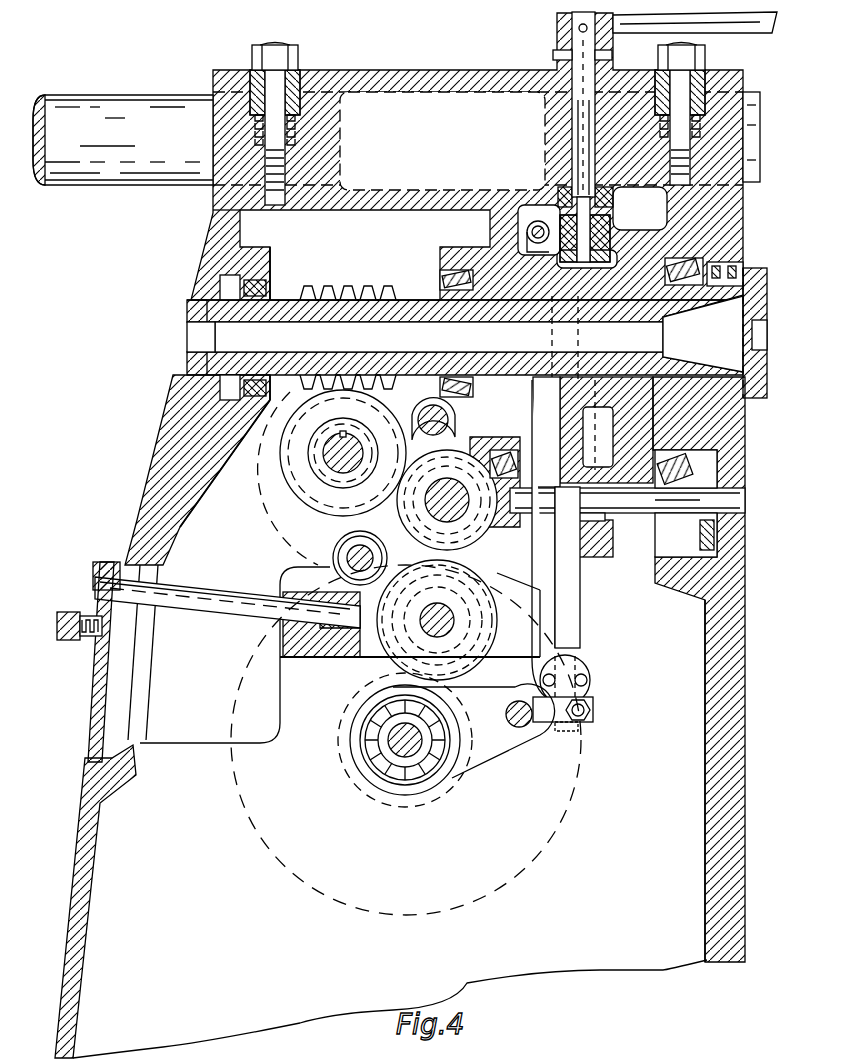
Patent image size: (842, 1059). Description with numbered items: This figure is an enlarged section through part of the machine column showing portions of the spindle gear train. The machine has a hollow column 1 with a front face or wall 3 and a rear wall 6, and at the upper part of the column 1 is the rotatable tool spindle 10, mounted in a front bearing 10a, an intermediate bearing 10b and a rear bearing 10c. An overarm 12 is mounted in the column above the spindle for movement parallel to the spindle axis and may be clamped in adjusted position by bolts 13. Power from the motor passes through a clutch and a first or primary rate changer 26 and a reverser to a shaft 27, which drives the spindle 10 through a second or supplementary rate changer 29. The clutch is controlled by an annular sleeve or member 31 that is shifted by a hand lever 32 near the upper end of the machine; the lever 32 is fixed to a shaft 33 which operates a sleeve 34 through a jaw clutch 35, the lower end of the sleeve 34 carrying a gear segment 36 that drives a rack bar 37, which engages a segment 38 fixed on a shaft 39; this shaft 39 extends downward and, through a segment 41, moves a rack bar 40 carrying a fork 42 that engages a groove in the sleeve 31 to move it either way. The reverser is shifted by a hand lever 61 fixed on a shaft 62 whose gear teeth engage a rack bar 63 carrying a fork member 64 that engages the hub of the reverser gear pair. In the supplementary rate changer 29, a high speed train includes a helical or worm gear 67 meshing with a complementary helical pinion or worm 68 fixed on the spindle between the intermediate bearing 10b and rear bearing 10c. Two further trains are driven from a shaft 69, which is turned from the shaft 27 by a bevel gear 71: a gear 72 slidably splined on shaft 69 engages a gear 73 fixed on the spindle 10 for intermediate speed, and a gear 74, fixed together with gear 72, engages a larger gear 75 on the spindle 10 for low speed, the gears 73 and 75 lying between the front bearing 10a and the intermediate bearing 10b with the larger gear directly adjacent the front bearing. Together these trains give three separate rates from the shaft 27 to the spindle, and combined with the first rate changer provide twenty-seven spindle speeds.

The hollow column 1 is at (747, 707).
The front face or wall 3 is at (712, 660).
The rear wall 6 is at (82, 850).
The tool spindle 10 is at (283, 300).
The front bearing 10a is at (700, 262).
The intermediate bearing 10b is at (445, 283).
The rear bearing 10c is at (272, 277).
The overarm 12 is at (157, 180).
The bolts 13 is at (272, 46).
The first or primary rate changer 26 is at (375, 632).
The shaft 27 is at (450, 522).
The second or supplementary rate changer 29 is at (303, 382).
The annular sleeve or member 31 is at (377, 773).
The hand lever 32 is at (757, 27).
The shaft 33 is at (573, 40).
The sleeve 34 is at (520, 67).
The jaw clutch 35 is at (560, 57).
The gear segment 36 is at (610, 233).
The rack bar 37 is at (520, 229).
The segment 38 is at (578, 210).
The shaft 39 is at (581, 625).
The rack bar 40 is at (518, 728).
The segment 41 is at (553, 722).
The fork 42 is at (473, 767).
The hand lever 61 is at (100, 606).
The shaft 62 is at (217, 594).
The rack bar 63 is at (320, 660).
The fork member 64 is at (377, 640).
The helical or worm gear 67 is at (303, 462).
The helical pinion or worm 68 is at (347, 297).
The shaft 69 is at (637, 520).
The bevel gear 71 is at (450, 478).
The gear 72 is at (580, 597).
The gear 73 is at (554, 420).
The gear 74 is at (607, 537).
The gear 75 is at (623, 432).